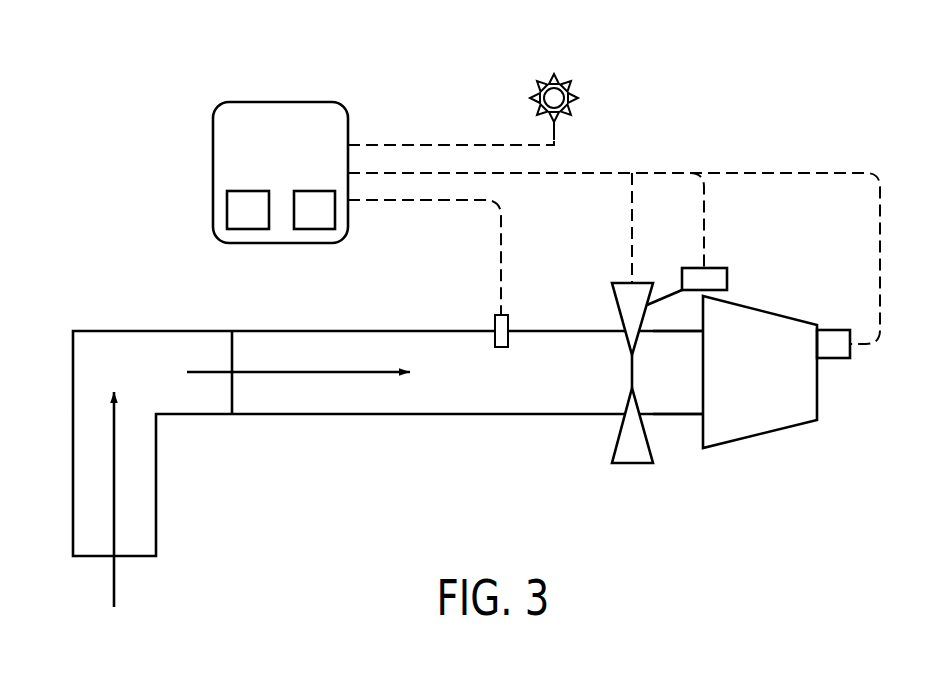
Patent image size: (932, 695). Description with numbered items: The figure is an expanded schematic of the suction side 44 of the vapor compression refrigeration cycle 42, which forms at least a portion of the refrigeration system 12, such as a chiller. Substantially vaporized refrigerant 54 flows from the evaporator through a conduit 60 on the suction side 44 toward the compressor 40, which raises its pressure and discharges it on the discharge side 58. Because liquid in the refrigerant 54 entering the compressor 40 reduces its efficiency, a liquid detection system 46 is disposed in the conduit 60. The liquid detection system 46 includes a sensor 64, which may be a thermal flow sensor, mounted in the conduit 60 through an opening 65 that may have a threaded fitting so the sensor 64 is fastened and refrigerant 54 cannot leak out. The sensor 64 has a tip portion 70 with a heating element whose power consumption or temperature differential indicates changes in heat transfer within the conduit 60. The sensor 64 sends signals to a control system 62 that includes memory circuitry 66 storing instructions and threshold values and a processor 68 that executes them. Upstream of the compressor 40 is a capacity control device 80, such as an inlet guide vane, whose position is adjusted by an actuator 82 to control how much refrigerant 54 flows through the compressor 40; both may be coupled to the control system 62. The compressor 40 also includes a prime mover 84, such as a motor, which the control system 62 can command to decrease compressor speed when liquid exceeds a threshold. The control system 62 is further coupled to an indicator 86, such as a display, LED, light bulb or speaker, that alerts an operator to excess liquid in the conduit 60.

The refrigeration system 12 is at (816, 90).
The compressor 40 is at (760, 307).
The vapor compression refrigeration cycle 42 is at (347, 530).
The suction side 44 is at (320, 443).
The liquid detection system 46 is at (512, 211).
The refrigerant 54 is at (197, 395).
The discharge side 58 is at (679, 450).
The conduit 60 is at (490, 414).
The control system 62 is at (280, 102).
The sensor 64 is at (510, 320).
The opening 65 is at (490, 323).
The memory circuitry 66 is at (246, 229).
The processor 68 is at (316, 229).
The tip portion 70 is at (502, 348).
The capacity control device 80 is at (629, 465).
The actuator 82 is at (728, 278).
The prime mover 84 is at (834, 360).
The indicator 86 is at (556, 80).